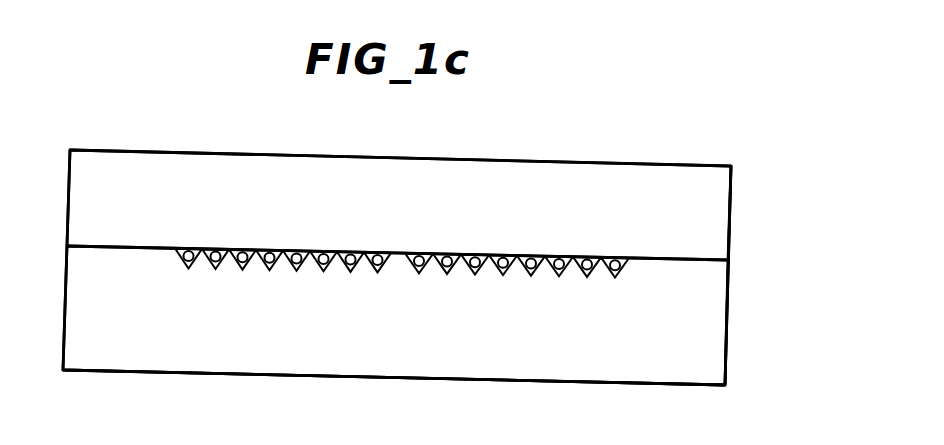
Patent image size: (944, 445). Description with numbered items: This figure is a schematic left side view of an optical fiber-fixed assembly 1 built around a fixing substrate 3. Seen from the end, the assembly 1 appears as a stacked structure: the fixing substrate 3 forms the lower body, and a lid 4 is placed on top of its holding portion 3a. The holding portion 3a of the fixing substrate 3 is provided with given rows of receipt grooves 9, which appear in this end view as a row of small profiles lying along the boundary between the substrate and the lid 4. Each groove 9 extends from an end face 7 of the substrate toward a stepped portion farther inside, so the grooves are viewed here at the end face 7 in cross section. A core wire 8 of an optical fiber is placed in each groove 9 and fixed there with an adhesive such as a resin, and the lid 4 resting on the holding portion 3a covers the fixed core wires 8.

The optical fiber-fixed assembly 1 is at (708, 158).
The fixing substrate 3 is at (736, 293).
The holding portion 3a is at (580, 370).
The lid 4 is at (439, 173).
The end face 7 is at (718, 337).
The core wire 8 is at (332, 268).
The receipt groove 9 is at (322, 266).